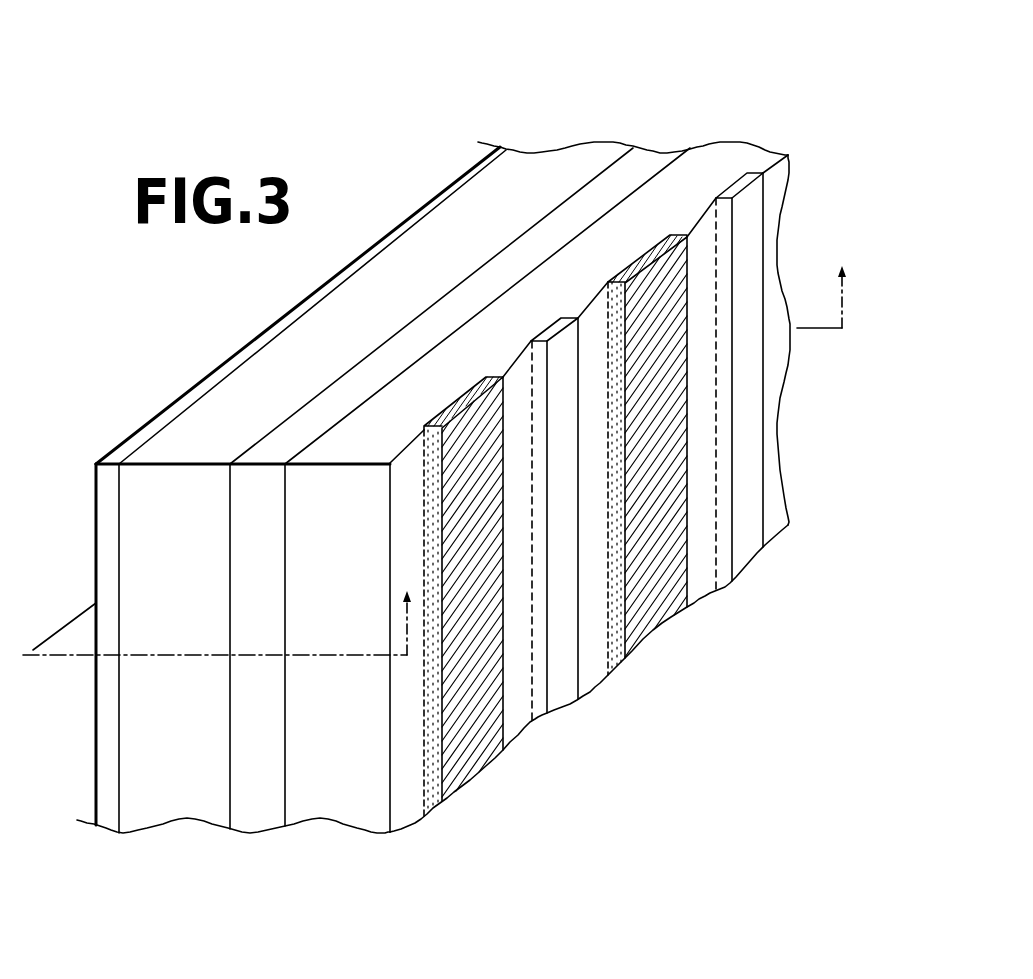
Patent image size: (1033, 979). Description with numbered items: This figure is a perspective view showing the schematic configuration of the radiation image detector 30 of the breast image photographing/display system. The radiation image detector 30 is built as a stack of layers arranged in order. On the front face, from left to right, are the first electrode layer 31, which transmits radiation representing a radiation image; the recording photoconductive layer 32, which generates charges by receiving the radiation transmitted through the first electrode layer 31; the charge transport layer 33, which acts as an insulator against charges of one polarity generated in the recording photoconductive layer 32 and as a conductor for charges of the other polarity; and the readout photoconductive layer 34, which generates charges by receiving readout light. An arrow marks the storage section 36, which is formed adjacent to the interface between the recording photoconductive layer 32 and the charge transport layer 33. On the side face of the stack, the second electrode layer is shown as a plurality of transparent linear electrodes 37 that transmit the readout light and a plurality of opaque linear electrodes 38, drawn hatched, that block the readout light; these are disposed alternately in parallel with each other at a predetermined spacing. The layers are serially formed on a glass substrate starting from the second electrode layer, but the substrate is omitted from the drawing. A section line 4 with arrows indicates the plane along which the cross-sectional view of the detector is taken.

The radiation image detector 30 is at (676, 88).
The first electrode layer 31 is at (110, 812).
The recording photoconductive layer 32 is at (148, 805).
The charge transport layer 33 is at (260, 807).
The readout photoconductive layer 34 is at (335, 808).
The storage section 36 is at (225, 807).
The transparent linear electrode 37 is at (565, 693).
The opaque linear electrode 38 is at (480, 765).
The section line 4- 4 is at (437, 477).